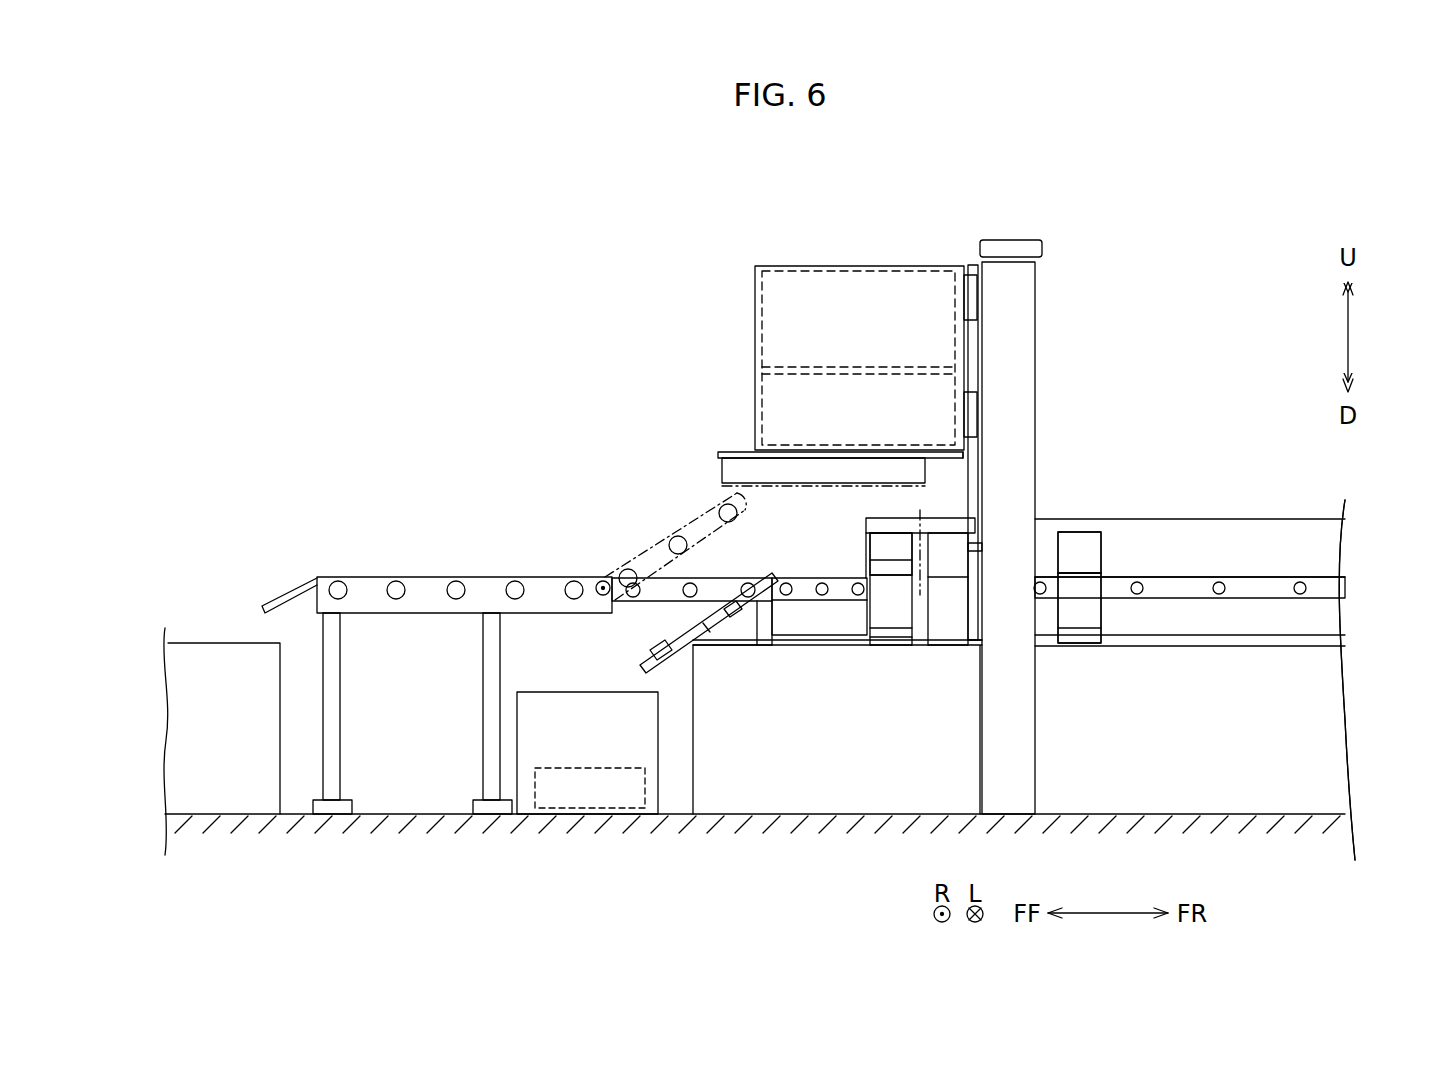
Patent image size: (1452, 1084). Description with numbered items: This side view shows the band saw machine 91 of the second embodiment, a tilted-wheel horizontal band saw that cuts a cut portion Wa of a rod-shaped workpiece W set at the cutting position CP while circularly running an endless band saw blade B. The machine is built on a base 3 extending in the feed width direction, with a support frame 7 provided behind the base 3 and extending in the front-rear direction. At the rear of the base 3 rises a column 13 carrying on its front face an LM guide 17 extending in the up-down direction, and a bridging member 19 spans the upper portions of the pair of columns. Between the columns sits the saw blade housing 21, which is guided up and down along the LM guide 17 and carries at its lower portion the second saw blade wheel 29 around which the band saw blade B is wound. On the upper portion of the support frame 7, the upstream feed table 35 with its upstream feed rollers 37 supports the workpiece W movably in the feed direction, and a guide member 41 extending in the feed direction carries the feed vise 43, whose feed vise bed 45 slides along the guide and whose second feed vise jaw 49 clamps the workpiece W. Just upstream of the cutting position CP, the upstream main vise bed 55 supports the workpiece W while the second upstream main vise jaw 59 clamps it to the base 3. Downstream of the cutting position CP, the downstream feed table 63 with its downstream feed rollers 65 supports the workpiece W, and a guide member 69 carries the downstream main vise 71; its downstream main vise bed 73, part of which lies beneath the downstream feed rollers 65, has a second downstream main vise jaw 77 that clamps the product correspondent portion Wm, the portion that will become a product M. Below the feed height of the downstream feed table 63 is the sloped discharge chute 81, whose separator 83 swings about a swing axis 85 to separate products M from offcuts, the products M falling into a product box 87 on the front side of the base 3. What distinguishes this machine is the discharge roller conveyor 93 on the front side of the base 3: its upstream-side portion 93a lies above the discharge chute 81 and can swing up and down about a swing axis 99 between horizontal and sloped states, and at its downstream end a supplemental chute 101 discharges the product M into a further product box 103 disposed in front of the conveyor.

The base 3 is at (800, 800).
The support frame 7 is at (1355, 719).
The column 13 is at (1035, 310).
The LM guide 17 is at (978, 360).
The bridging member 19 is at (1013, 240).
The saw blade housing 21 is at (752, 303).
The second saw blade wheel 29 is at (722, 468).
The upstream feed table 35 is at (1280, 577).
The upstream feed rollers 37 is at (1222, 580).
The guide member 41 is at (1222, 640).
The feed vise 43 is at (1072, 530).
The feed vise bed 45 is at (1077, 612).
The second feed vise jaw 49 is at (1100, 552).
The upstream main vise bed 55 is at (950, 640).
The second upstream main vise jaw 59 is at (955, 557).
The downstream feed table 63 is at (692, 642).
The downstream feed rollers 65 is at (822, 600).
The guide member 69 is at (818, 646).
The downstream main vise 71 is at (866, 540).
The downstream main vise bed 73 is at (893, 615).
The second downstream main vise jaw 77 is at (880, 560).
The discharge chute 81 is at (757, 615).
The separator 83 is at (712, 645).
The swing axis 85 is at (650, 640).
The product box 87 is at (530, 692).
The band saw machine 91 is at (1113, 178).
The discharge roller conveyor 93 is at (462, 649).
The upstream-side portion 93a is at (712, 545).
The swing axis 99 is at (603, 588).
The supplemental chute 101 is at (282, 600).
The product box 103 is at (198, 643).
The band saw blade B is at (977, 462).
The cutting position CP is at (965, 512).
The workpiece W is at (1170, 519).
The cut portion Wa is at (920, 520).
The product correspondent portion Wm is at (870, 548).
The product M is at (535, 780).